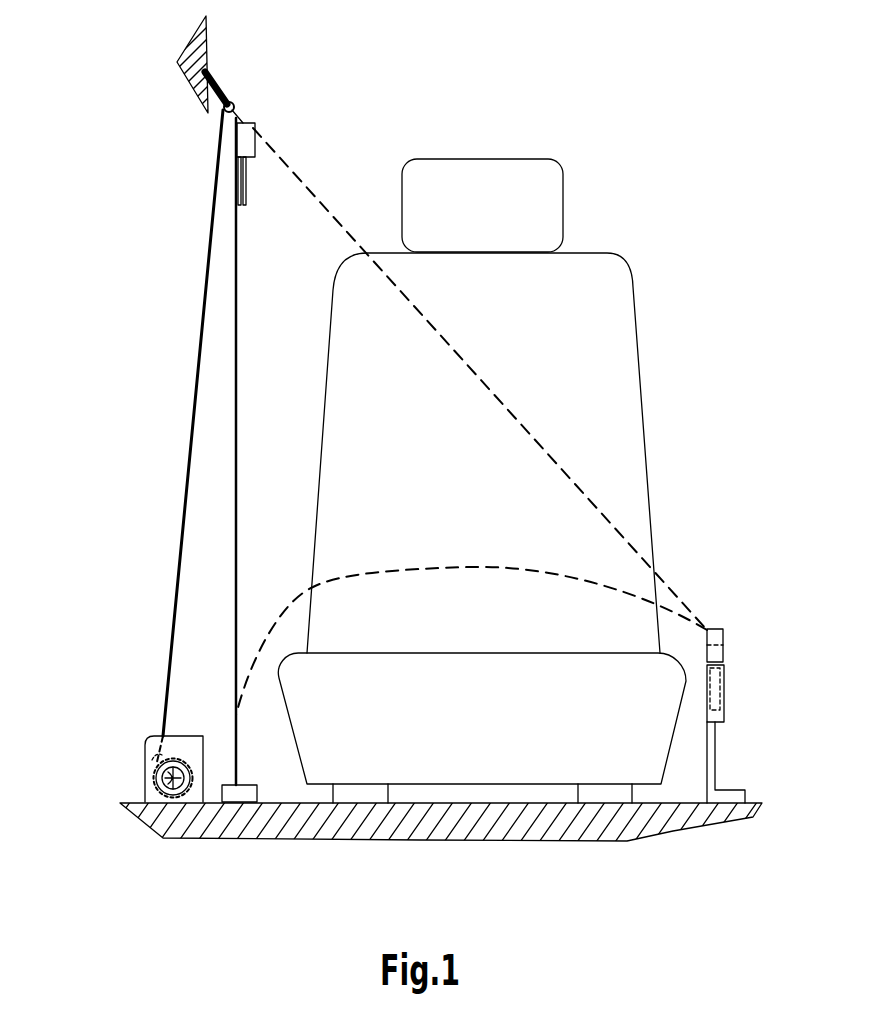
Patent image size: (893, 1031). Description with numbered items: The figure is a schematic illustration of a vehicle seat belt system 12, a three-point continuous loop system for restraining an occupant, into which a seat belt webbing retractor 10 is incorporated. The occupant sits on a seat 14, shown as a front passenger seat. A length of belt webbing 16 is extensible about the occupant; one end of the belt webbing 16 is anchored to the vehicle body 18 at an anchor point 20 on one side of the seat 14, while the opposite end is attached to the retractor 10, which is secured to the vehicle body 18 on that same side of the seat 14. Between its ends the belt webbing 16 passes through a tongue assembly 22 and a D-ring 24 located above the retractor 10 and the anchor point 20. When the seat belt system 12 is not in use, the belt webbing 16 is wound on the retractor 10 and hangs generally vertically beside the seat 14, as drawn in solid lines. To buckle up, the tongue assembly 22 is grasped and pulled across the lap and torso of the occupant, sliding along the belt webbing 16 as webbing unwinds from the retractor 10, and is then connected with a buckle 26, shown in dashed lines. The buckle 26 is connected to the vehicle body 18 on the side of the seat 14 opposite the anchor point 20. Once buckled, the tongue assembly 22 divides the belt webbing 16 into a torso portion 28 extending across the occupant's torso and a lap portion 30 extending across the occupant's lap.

The seat belt webbing retractor 10 is at (143, 772).
The three-point continuous loop seat belt system 12 is at (140, 284).
The seat 14 is at (600, 273).
The belt webbing 16 is at (186, 455).
The vehicle body 18 is at (163, 813).
The anchor point 20 is at (248, 784).
The tongue assembly 22 is at (243, 137).
The D-ring 24 is at (208, 82).
The buckle 26 is at (723, 720).
The torso portion 28 is at (557, 440).
The lap portion 30 is at (512, 567).